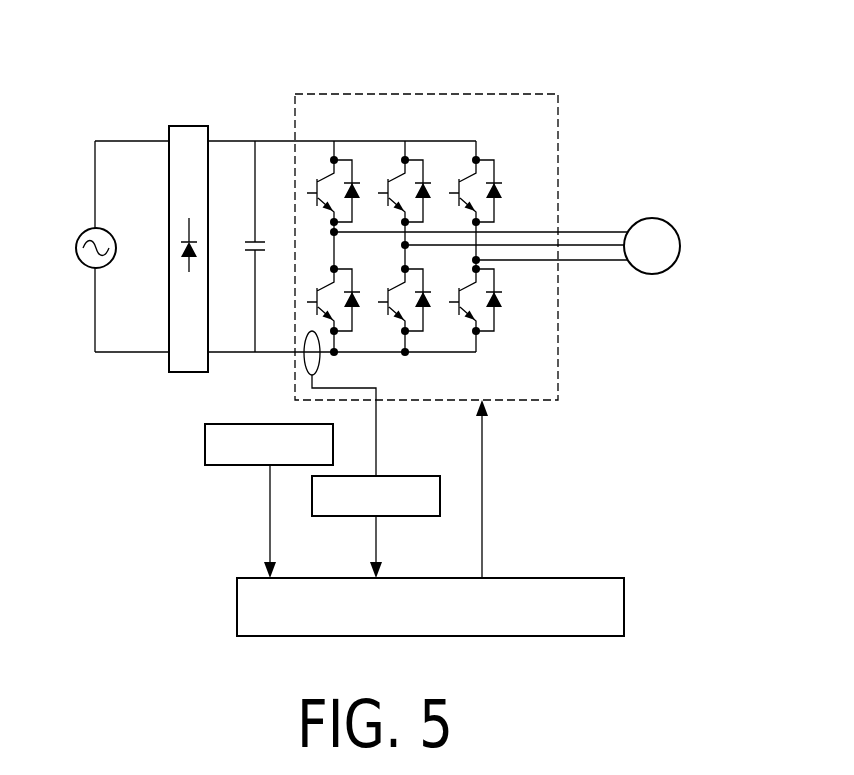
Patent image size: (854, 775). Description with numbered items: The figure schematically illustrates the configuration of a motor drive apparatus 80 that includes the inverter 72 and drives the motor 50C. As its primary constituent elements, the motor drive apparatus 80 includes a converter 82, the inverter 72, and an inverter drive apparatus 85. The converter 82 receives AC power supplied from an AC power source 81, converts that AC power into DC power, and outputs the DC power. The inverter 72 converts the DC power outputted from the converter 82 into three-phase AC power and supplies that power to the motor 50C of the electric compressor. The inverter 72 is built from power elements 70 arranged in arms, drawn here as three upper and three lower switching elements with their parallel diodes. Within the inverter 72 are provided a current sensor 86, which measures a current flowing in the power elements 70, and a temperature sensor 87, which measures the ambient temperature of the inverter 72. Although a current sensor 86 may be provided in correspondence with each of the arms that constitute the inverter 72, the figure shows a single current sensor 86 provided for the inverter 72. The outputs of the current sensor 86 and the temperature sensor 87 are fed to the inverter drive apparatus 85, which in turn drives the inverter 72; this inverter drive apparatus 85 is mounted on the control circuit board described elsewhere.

The power element 70 is at (355, 162).
The inverter 72 is at (462, 94).
The motor drive apparatus 80 is at (458, 202).
The AC power source 81 is at (80, 233).
The converter 82 is at (188, 126).
The inverter drive apparatus 85 is at (624, 605).
The current sensor 86 is at (415, 476).
The temperature sensor 87 is at (236, 424).
The motor 50C is at (650, 218).